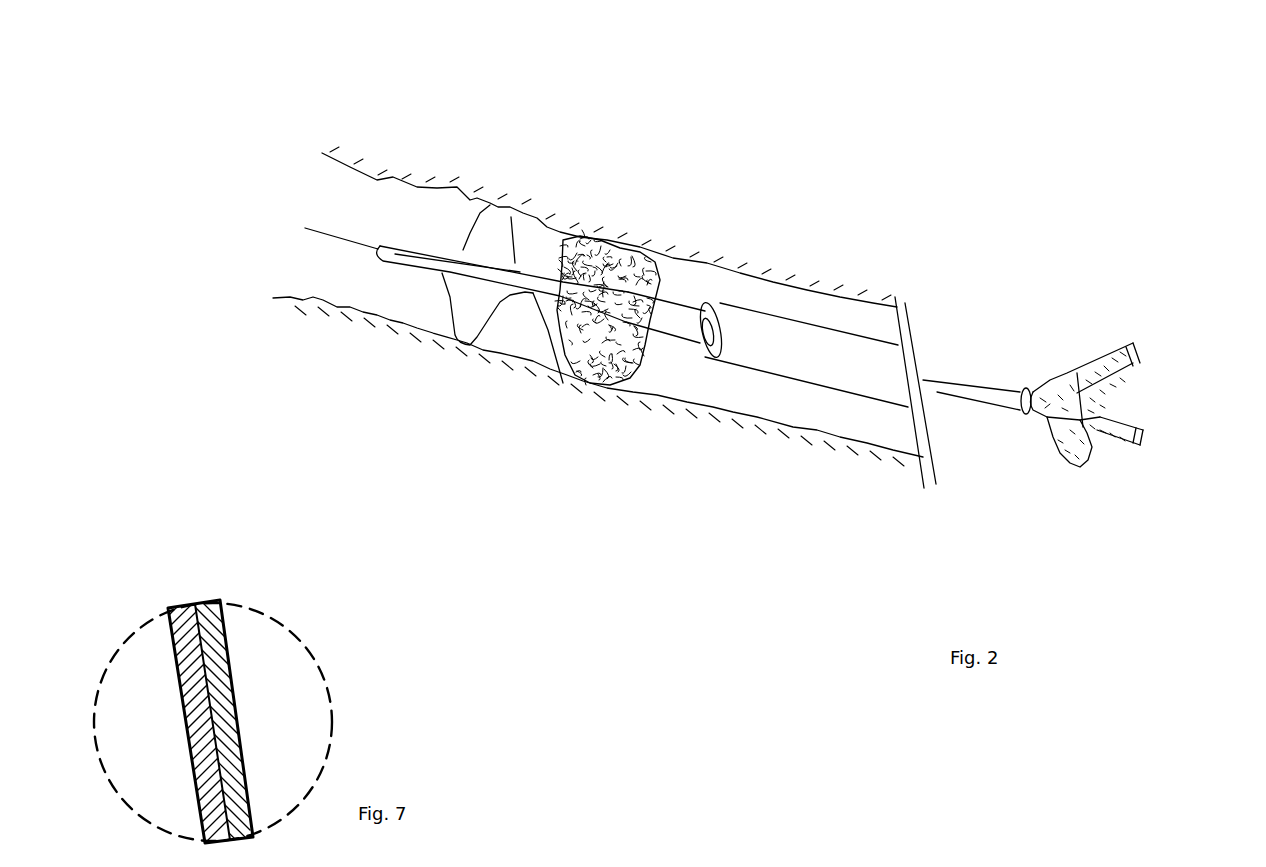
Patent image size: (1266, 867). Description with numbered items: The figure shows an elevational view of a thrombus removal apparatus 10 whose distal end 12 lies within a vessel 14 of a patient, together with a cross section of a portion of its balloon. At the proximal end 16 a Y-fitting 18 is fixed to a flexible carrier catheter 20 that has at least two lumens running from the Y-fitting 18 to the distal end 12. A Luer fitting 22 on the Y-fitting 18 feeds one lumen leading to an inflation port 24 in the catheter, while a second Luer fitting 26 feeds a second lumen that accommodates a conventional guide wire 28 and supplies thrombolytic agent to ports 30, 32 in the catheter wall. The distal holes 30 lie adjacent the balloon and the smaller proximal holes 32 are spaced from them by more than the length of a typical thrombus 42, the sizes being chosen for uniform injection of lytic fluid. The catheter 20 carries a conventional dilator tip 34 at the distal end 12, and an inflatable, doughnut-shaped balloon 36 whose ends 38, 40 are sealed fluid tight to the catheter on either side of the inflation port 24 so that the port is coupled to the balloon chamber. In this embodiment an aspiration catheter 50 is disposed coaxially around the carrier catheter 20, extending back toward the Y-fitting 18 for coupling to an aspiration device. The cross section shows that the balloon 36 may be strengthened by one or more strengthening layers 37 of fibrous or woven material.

In FIG. 2, the thrombus removal apparatus 10 is at (765, 145).
In FIG. 2, the distal end 12 is at (445, 207).
In FIG. 2, the vessel 14 is at (850, 297).
In FIG. 2, the proximal end 16 is at (1062, 325).
In FIG. 2, the Y-fitting 18 is at (1040, 447).
In FIG. 2, the carrier catheter 20 is at (707, 312).
In FIG. 2, the Luer fitting 22 is at (1137, 340).
In FIG. 2, the inflation port 24 is at (492, 268).
In FIG. 2, the second Luer fitting 26 is at (1145, 430).
In FIG. 2, the guide wire 28 is at (328, 243).
In FIG. 2, the distal holes 30 is at (541, 356).
In FIG. 2, the proximal holes 32 is at (677, 312).
In FIG. 2, the dilator tip 34 is at (397, 243).
In FIG. 2, the inflatable balloon 36 is at (450, 337).
In FIG. 7, the inflatable balloon 36 is at (312, 627).
In FIG. 7, the strengthening layer 37 is at (195, 602).
In FIG. 2, the balloon end 38 is at (428, 248).
In FIG. 2, the balloon end 40 is at (517, 264).
In FIG. 2, the thrombus 42 is at (640, 250).
In FIG. 2, the aspiration catheter 50 is at (815, 380).